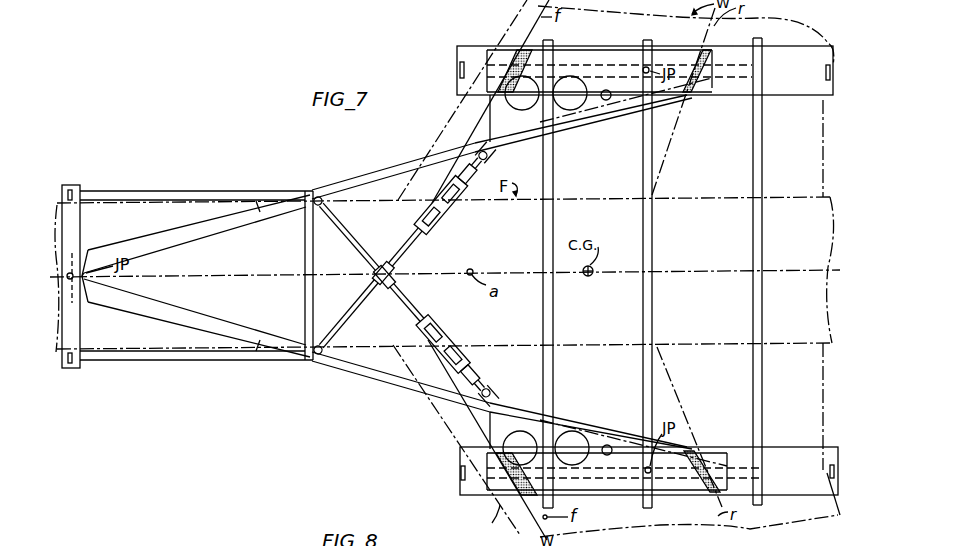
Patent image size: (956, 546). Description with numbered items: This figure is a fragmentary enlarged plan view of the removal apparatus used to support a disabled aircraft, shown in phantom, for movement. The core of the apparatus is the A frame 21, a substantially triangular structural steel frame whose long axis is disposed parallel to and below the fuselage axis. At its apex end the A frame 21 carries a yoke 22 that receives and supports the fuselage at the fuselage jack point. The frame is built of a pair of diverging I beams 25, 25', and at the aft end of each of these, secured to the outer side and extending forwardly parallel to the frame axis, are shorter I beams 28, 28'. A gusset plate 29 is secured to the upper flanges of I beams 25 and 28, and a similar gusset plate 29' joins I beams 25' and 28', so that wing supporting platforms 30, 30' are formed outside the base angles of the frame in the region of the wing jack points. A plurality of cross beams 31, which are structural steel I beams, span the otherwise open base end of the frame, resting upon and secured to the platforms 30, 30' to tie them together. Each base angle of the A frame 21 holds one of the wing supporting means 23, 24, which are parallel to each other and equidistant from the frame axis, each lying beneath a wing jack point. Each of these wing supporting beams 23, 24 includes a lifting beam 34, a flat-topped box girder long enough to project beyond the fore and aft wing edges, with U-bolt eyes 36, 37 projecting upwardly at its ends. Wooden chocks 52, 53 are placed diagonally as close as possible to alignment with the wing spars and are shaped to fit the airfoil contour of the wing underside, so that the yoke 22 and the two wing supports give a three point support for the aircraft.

The A frame 21 is at (332, 184).
The yoke 22 is at (67, 185).
The wing supporting means 23 is at (486, 47).
The wing supporting means 24 is at (485, 500).
The diverging I beam 25 is at (393, 170).
The diverging I beam 25' is at (401, 386).
The shorter I beam 28 is at (408, 189).
The shorter I beam 28' is at (484, 525).
The gusset plate 29 is at (583, 123).
The gusset plate 29' is at (591, 424).
The wing supporting platform 30 is at (550, 109).
The wing supporting platform 30' is at (551, 438).
The cross beams 31 is at (754, 378).
The lifting beam 34 is at (778, 86).
The U-bolt eye 36 is at (460, 73).
The U-bolt eye 37 is at (826, 72).
The wooden chock 52 is at (520, 52).
The wooden chock 53 is at (700, 50).